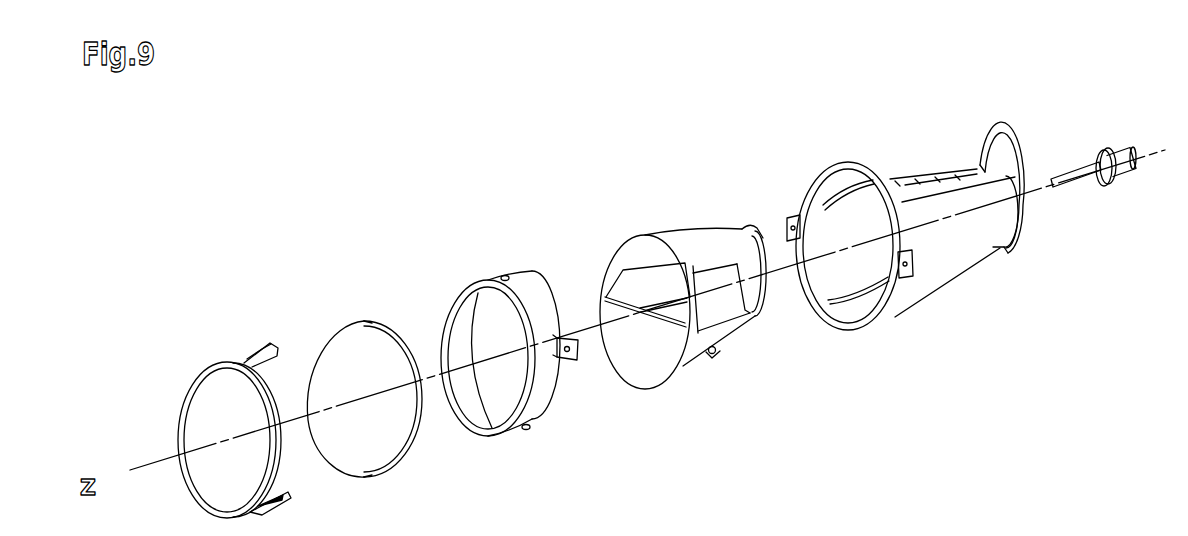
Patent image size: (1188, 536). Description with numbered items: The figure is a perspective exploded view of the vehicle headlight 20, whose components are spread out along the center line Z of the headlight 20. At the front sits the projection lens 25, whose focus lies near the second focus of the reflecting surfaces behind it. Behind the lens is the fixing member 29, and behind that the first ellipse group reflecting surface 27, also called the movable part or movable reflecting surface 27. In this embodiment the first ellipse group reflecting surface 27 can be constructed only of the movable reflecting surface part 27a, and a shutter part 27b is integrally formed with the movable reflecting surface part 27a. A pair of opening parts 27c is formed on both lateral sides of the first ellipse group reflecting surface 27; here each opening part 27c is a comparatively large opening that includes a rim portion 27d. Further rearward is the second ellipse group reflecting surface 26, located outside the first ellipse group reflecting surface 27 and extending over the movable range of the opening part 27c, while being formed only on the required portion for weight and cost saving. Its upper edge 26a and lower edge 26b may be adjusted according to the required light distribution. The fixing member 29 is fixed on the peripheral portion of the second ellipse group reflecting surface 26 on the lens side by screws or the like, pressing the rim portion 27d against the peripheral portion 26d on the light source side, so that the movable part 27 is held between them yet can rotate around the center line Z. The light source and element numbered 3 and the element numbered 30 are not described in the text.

The vehicle headlight 20 is at (780, 113).
The light source bulb 3 is at (1123, 153).
The projection lens 25 is at (356, 373).
The second ellipse group reflecting surface 26 is at (915, 177).
The upper edge 26a is at (962, 180).
The lower edge 26b is at (973, 260).
The peripheral portion 26d is at (1023, 162).
The first ellipse group reflecting surface 27 is at (700, 247).
The movable reflecting surface part 27a is at (717, 312).
The shutter part 27b is at (640, 348).
The opening part 27c is at (647, 278).
The rim portion 27d is at (767, 288).
The fixing member 29 is at (532, 297).
The lamp body 30 is at (880, 535).